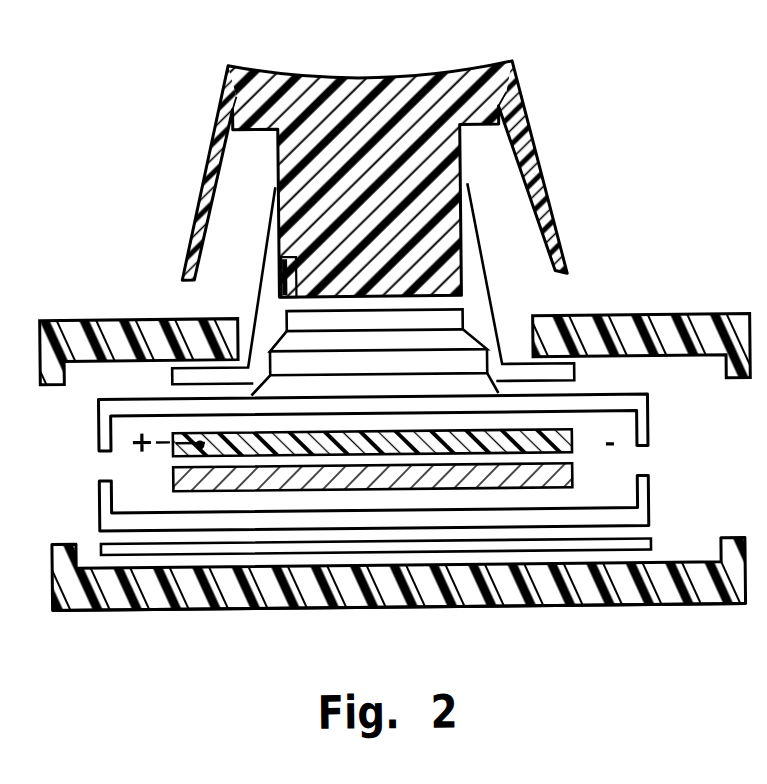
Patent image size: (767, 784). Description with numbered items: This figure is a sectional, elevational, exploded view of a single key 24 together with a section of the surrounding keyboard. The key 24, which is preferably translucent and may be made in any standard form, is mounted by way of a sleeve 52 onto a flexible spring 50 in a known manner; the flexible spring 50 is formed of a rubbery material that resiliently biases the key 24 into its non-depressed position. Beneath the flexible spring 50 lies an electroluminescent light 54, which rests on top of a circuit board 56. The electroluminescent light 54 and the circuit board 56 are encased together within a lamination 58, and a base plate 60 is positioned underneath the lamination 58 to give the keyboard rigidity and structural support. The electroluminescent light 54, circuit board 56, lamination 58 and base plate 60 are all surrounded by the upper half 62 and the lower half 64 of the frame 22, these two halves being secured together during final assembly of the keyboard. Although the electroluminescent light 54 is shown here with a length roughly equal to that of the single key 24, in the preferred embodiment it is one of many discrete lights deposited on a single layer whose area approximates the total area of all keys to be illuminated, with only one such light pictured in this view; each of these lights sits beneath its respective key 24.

The frame 22 is at (705, 607).
The key 24 is at (365, 77).
The flexible spring 50 is at (448, 321).
The sleeve 52 is at (487, 254).
The electroluminescent light 54 is at (574, 440).
The circuit board 56 is at (574, 475).
The lamination 58 is at (646, 426).
The base plate 60 is at (649, 549).
The upper half 62 is at (661, 317).
The lower half 64 is at (585, 606).